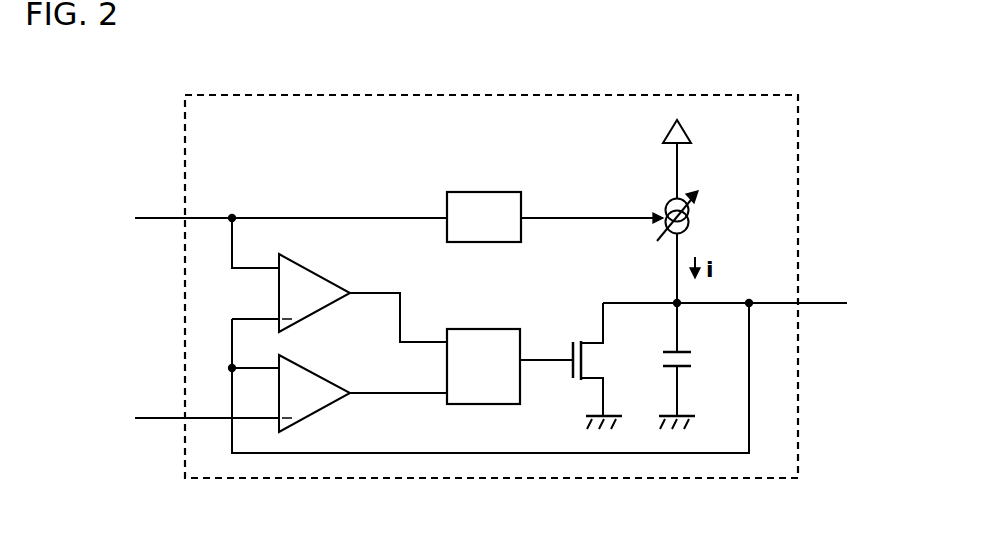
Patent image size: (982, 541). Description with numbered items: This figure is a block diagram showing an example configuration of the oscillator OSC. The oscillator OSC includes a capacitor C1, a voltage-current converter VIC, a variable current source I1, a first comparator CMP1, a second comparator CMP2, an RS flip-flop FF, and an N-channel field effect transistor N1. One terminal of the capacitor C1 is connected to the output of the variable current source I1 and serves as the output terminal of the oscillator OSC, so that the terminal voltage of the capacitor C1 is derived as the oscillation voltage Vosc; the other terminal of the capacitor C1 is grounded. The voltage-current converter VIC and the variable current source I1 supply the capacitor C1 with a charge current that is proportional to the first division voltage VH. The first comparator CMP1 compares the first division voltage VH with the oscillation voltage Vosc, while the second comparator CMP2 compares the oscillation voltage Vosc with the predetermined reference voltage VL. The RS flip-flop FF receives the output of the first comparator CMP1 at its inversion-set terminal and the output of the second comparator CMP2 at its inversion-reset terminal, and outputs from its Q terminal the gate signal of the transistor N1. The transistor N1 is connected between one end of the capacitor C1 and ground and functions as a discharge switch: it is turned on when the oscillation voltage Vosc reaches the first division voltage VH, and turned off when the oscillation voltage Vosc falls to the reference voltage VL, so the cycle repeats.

The oscillator OSC is at (491, 95).
The voltage-current converter VIC is at (487, 192).
The first comparator CMP1 is at (318, 275).
The second comparator CMP2 is at (318, 375).
The RS flip-flop FF is at (486, 329).
The N-channel field effect transistor N1 is at (573, 343).
The variable current source I1 is at (690, 219).
The capacitor C1 is at (690, 360).
The first division voltage VH is at (275, 218).
The predetermined reference voltage VL is at (191, 418).
The oscillation voltage Vosc is at (749, 303).